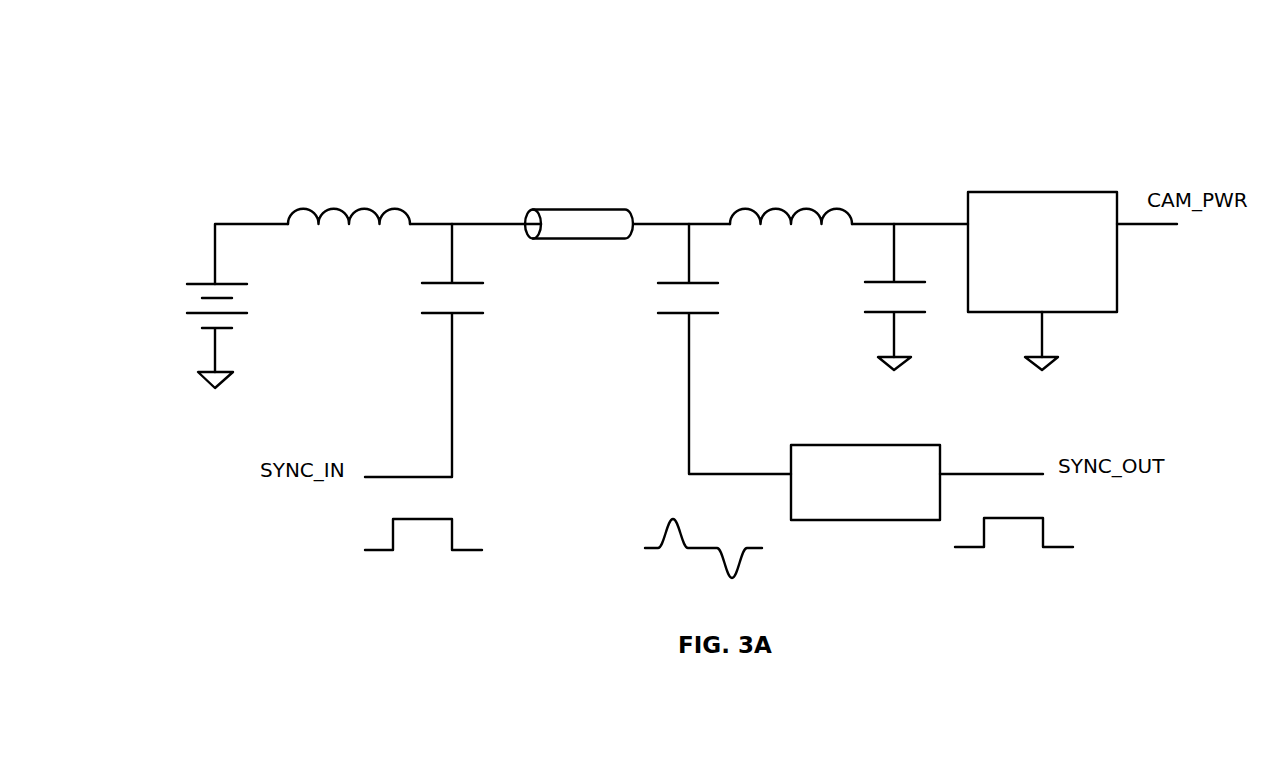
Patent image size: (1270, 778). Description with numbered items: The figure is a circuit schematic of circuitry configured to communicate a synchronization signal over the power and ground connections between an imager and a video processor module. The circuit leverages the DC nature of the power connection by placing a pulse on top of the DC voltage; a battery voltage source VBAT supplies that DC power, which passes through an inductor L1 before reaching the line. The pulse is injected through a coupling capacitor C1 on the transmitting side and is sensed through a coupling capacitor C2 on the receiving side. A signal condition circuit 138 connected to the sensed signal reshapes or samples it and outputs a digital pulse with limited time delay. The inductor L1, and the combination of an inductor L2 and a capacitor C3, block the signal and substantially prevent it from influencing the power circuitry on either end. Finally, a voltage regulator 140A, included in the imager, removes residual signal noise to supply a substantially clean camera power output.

The voltage regulator 140A is at (1022, 192).
The signal condition circuit 138 is at (868, 520).
The inductor L1 is at (349, 199).
The inductor L2 is at (791, 199).
The coupling capacitor C1 is at (424, 350).
The coupling capacitor C2 is at (704, 349).
The capacitor C3 is at (874, 297).
The battery voltage source VBAT is at (201, 306).